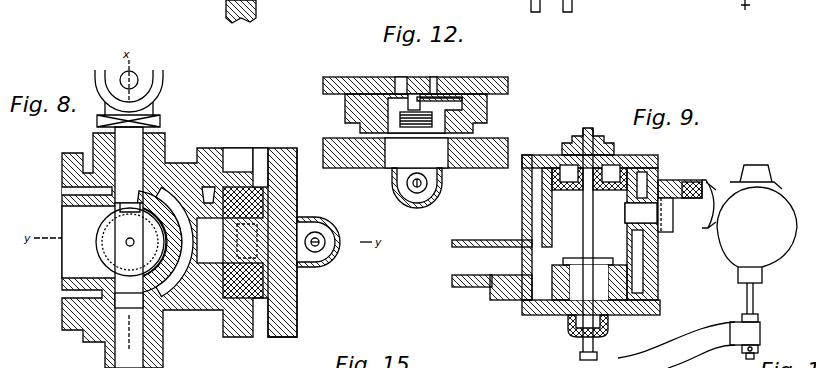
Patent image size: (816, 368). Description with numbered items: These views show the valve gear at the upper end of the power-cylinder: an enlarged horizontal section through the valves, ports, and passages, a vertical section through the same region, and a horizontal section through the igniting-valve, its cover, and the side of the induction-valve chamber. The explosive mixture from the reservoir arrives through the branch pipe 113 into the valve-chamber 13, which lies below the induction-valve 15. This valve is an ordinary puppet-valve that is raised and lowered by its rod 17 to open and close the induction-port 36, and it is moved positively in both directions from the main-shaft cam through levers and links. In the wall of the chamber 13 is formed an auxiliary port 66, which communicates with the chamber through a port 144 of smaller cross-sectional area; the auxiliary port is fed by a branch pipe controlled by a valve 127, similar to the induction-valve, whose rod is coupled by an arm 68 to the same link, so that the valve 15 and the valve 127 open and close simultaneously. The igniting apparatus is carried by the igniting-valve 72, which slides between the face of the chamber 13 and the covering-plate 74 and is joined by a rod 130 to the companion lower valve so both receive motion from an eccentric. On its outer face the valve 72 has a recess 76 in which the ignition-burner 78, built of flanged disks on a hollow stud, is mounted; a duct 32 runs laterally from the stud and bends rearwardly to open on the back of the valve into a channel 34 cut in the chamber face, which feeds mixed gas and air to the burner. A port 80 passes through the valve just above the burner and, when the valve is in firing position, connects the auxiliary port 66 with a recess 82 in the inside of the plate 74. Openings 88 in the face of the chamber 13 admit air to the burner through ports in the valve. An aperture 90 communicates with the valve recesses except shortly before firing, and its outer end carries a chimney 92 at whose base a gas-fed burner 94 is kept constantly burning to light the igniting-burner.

In FIG. 8, the valve-chamber 13 is at (114, 242).
In FIG. 9, the valve-chamber 13 is at (589, 224).
In FIG. 8, the induction-valve 15 is at (108, 258).
In FIG. 9, the induction-valve 15 is at (598, 258).
In FIG. 9, the rod 17 is at (583, 346).
In FIG. 12, the duct 32 is at (434, 92).
In FIG. 12, the channel 34 is at (458, 97).
In FIG. 8, the induction-port 36 is at (130, 261).
In FIG. 9, the induction-port 36 is at (589, 282).
In FIG. 8, the auxiliary port 66 is at (182, 214).
In FIG. 9, the auxiliary port 66 is at (673, 215).
In FIG. 9, the arm 68 is at (689, 345).
In FIG. 8, the igniting-valve 72 is at (243, 242).
In FIG. 8, the covering-plate 74 is at (282, 242).
In FIG. 12, the recess 76 is at (437, 133).
In FIG. 8, the ignition-burner 78 is at (247, 241).
In FIG. 12, the ignition-burner 78 is at (407, 133).
In FIG. 8, the port 80 is at (228, 219).
In FIG. 8, the recess 82 is at (268, 250).
In FIG. 12, the opening 88 is at (430, 70).
In FIG. 12, the aperture 90 is at (416, 153).
In FIG. 8, the chimney 92 is at (326, 242).
In FIG. 12, the chimney 92 is at (433, 190).
In FIG. 8, the burner 94 is at (319, 247).
In FIG. 12, the burner 94 is at (416, 196).
In FIG. 8, the branch pipe 113 is at (128, 338).
In FIG. 9, the branch pipe 113 is at (492, 270).
In FIG. 8, the valve 127 is at (157, 80).
In FIG. 9, the valve 127 is at (757, 243).
In FIG. 9, the rod 130 is at (758, 8).
In FIG. 8, the port 144 is at (133, 209).
In FIG. 9, the port 144 is at (604, 194).